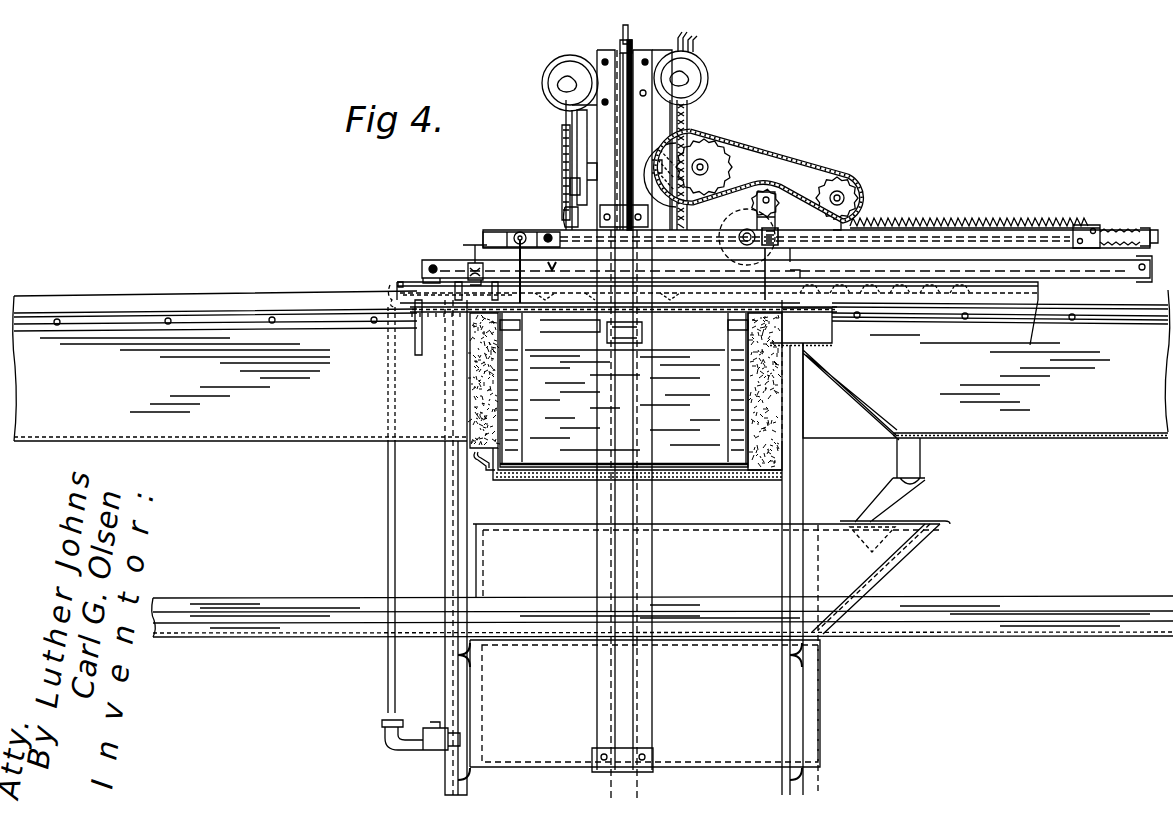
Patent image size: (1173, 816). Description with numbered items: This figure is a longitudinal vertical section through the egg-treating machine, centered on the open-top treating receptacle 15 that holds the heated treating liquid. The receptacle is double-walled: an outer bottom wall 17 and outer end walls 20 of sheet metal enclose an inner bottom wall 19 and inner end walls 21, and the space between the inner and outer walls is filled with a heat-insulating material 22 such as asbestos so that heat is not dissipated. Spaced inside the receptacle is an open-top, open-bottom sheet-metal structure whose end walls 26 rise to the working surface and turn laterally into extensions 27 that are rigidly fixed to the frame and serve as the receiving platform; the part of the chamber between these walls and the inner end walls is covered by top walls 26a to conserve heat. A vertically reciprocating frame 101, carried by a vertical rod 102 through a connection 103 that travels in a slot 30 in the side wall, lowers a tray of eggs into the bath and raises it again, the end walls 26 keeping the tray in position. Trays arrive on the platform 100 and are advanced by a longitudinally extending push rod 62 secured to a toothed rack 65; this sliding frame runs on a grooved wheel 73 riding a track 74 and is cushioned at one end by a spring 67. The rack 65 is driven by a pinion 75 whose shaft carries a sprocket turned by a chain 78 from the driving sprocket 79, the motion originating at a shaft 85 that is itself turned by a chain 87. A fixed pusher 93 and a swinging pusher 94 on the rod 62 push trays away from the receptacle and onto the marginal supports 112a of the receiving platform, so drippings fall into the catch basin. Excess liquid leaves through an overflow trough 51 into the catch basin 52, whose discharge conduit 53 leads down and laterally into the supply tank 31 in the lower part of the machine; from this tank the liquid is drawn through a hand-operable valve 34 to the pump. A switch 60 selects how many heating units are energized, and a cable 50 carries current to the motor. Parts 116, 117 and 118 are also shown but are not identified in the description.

The treating receptacle 15 is at (570, 329).
The outer bottom wall 17 is at (748, 484).
The inner bottom wall 19 is at (722, 484).
The outer end walls 20 is at (470, 403).
The inner end walls 21 is at (522, 388).
The heat-insulating material 22 is at (470, 368).
The end walls 26 is at (522, 358).
The top walls 26a is at (512, 324).
The extensions 27 is at (440, 312).
The slot 30 is at (625, 420).
The supply tank 31 is at (699, 652).
The hand-operable valve 34 is at (462, 258).
The cable 50 is at (692, 114).
The overflow trough 51 is at (832, 340).
The catch basin 52 is at (986, 365).
The discharge conduit 53 is at (925, 473).
The switch 60 is at (542, 88).
The push rod 62 is at (500, 232).
The toothed rack 65 is at (1023, 218).
The cushioning spring 67 is at (1118, 224).
The grooved wheel 73 is at (728, 222).
The track 74 is at (816, 254).
The pinion 75 is at (848, 183).
The chain 78 is at (790, 165).
The driving sprocket 79 is at (718, 158).
The shaft 85 is at (562, 162).
The chain 87 is at (568, 197).
The fixed pusher 93 is at (805, 270).
The swinging pusher 94 is at (570, 268).
The platform 100 is at (212, 312).
The vertically reciprocating frame 101 is at (644, 334).
The vertical rod 102 is at (620, 50).
The connection 103 is at (622, 28).
The marginal supports 112a is at (1026, 332).
The pipe connection 116 is at (695, 33).
The pipe connection 117 is at (714, 39).
The gauge 118 is at (702, 72).